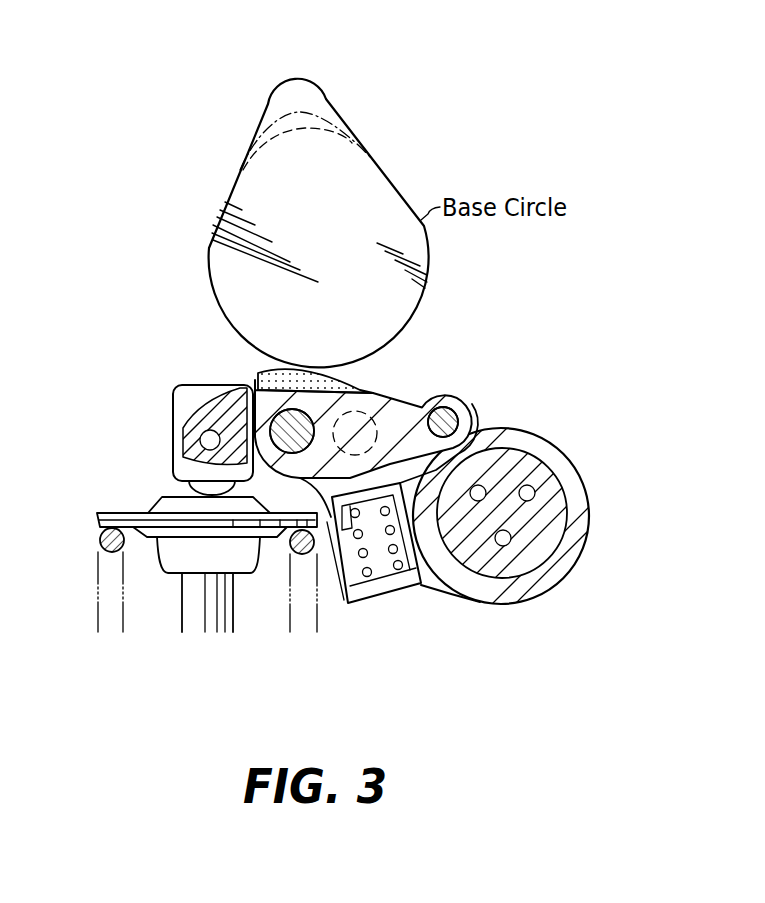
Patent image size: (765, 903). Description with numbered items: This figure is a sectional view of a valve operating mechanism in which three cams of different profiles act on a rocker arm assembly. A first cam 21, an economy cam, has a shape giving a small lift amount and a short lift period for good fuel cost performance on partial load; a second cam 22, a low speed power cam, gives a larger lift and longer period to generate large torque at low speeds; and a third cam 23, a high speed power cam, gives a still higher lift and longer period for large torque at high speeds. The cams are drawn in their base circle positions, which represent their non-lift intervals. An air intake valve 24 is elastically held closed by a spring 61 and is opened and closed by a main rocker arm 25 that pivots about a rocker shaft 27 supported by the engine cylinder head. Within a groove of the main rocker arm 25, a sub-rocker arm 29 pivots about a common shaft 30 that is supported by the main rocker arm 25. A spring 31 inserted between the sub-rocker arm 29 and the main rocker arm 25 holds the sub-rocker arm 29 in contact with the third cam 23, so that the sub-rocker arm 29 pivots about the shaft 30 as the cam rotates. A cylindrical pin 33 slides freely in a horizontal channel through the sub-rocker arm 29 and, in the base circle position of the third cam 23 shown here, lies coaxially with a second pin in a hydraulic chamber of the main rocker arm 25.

The first cam 21 is at (345, 127).
The second cam 22 is at (271, 131).
The third cam 23 is at (325, 97).
The air intake valve 24 is at (212, 608).
The main rocker arm 25 is at (173, 390).
The rocker shaft 27 is at (558, 511).
The sub-rocker arm 29 is at (395, 417).
The common shaft 30 is at (452, 418).
The spring 31 is at (363, 558).
The cylindrical pin 33 is at (260, 382).
The spring 61 is at (97, 540).